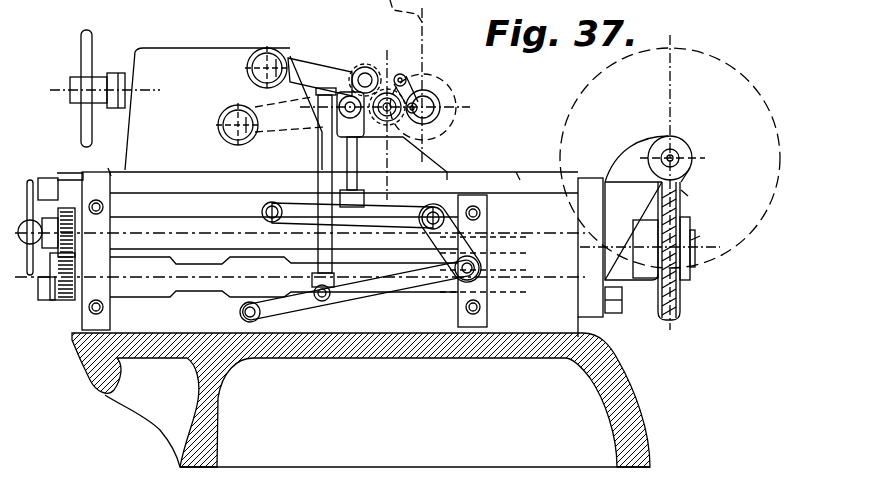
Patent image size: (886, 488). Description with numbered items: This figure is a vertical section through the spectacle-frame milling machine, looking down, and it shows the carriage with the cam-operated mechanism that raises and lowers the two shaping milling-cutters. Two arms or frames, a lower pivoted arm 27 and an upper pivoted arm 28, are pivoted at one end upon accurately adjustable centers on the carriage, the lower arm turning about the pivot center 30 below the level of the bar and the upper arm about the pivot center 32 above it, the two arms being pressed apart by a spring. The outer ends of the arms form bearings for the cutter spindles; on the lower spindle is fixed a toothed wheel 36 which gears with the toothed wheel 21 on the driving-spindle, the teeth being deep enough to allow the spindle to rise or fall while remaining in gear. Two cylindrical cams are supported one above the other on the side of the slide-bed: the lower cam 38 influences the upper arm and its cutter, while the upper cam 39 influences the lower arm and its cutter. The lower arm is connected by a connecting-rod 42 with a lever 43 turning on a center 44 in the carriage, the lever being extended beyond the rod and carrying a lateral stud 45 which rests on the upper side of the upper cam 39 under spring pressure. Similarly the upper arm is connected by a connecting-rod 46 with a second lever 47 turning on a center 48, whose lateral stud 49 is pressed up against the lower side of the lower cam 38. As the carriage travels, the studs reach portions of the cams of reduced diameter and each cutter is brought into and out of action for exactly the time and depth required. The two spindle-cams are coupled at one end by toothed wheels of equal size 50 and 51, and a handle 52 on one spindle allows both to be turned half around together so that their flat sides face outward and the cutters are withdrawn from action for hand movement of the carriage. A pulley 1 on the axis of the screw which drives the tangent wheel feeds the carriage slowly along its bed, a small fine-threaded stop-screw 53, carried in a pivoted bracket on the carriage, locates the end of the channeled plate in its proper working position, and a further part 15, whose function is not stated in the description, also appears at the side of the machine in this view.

The pulley 1 is at (670, 182).
The hand lever 15 is at (91, 38).
The toothed wheel 21 is at (434, 77).
The lower pivoted arm 27 is at (290, 114).
The upper pivoted arm 28 is at (320, 77).
The pivot center of lower arm 30 is at (226, 114).
The pivot center of upper arm 32 is at (262, 50).
The toothed wheel 36 is at (358, 70).
The lower cam 38 is at (300, 277).
The upper cam 39 is at (300, 233).
The connecting-rod 42 is at (356, 149).
The lever 43 is at (352, 215).
The center 44 is at (432, 207).
The lateral stud 45 is at (262, 212).
The connecting-rod 46 is at (320, 168).
The second lever 47 is at (358, 290).
The center 48 is at (480, 268).
The lateral stud 49 is at (242, 315).
The toothed wheel 50 is at (66, 303).
The toothed wheel 51 is at (60, 215).
The handle 52 is at (30, 190).
The stop-screw 53 is at (401, 74).